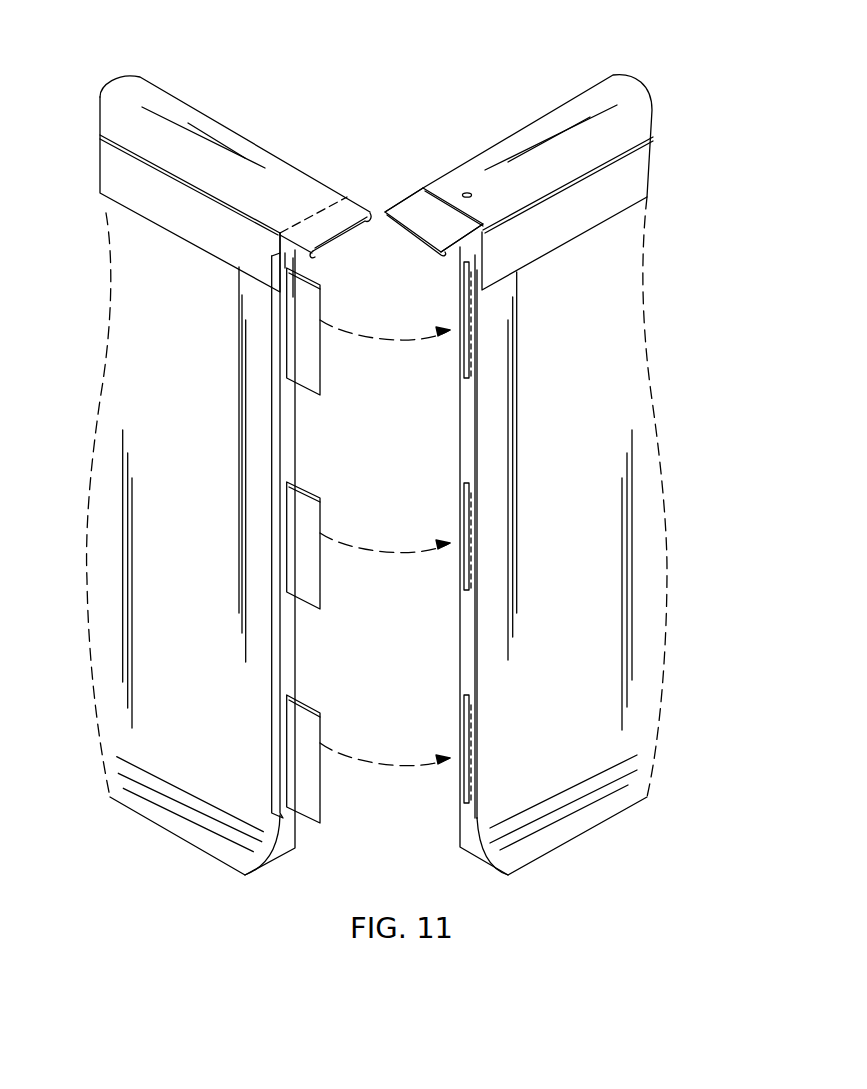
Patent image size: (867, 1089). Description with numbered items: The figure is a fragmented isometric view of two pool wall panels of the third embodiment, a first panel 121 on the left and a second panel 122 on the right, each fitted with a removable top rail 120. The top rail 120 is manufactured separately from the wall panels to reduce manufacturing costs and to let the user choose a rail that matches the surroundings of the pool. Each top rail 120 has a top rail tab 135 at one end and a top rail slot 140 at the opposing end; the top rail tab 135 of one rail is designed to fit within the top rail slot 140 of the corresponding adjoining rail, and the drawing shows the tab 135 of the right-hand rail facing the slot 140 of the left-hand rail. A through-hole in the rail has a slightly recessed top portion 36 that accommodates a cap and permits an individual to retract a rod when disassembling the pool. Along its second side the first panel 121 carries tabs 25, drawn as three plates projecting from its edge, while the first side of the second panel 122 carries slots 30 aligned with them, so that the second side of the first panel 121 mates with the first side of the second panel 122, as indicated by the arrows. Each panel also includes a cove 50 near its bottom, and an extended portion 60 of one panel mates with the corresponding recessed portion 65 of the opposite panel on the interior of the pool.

The top rail 120 is at (257, 146).
The first panel 121 is at (135, 353).
The second panel 122 is at (610, 323).
The top rail tab 135 is at (413, 207).
The top rail slot 140 is at (343, 208).
The recessed portion of the through-hole 36 is at (467, 192).
The slots 30 is at (468, 320).
The tabs 25 is at (293, 483).
The recessed portion 65 is at (280, 648).
The cove 50 is at (187, 807).
The extended portion 60 is at (477, 818).